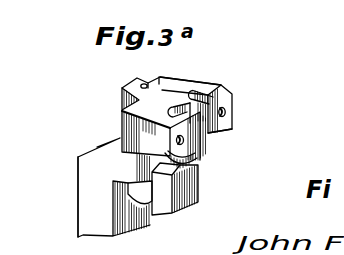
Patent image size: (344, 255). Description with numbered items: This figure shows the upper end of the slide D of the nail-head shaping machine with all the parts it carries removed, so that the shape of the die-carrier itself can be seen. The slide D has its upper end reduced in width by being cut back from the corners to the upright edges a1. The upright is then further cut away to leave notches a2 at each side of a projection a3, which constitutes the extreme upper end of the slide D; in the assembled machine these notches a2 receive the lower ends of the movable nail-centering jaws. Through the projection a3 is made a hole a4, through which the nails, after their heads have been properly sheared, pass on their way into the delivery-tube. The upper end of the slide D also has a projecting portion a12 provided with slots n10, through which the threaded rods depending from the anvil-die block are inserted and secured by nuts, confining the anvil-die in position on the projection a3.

The projection a3 is at (124, 87).
The hole a4 is at (160, 82).
The upright edges a1 is at (182, 83).
The notches a2 is at (97, 147).
The projecting portion a12 is at (232, 129).
The slots n10 is at (224, 107).
The slide D is at (89, 197).